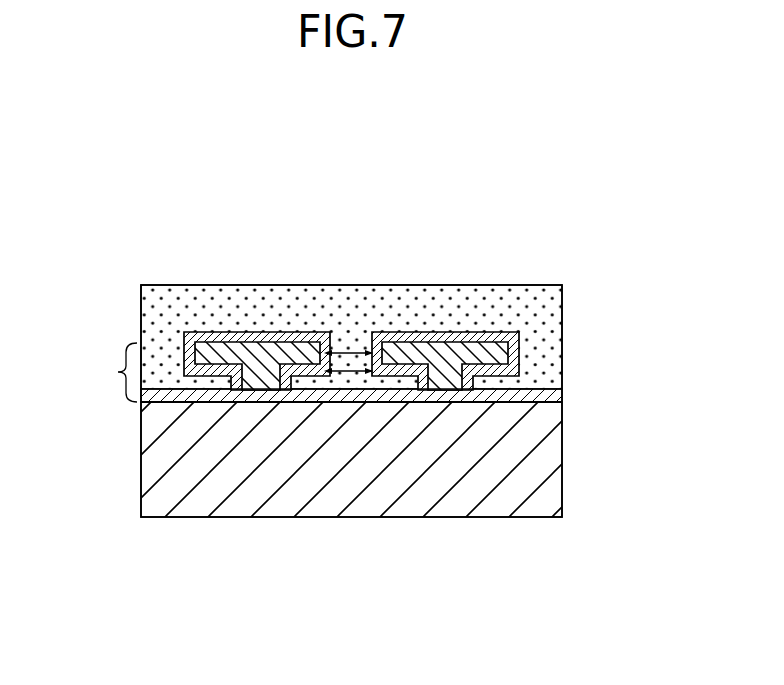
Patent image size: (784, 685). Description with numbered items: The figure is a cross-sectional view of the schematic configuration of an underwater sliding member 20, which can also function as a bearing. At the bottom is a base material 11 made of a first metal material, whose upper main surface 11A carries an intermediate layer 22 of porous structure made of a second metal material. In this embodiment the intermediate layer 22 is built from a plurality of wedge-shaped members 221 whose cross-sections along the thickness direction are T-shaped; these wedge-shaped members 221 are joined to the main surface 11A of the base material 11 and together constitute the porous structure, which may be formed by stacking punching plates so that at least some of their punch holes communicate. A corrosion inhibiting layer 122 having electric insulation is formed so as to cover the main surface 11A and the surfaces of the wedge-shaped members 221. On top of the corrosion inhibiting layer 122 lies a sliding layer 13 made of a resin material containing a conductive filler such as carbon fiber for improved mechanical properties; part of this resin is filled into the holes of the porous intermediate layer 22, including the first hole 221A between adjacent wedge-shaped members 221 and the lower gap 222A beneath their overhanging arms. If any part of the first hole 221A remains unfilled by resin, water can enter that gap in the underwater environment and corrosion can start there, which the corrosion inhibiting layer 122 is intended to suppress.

The underwater sliding member 20 is at (352, 393).
The base material 11 is at (163, 468).
The main surface 11A is at (172, 404).
The sliding layer 13 is at (180, 285).
The intermediate layer 22 is at (109, 372).
The corrosion inhibiting layer 122 is at (293, 335).
The wedge-shaped member 221 is at (255, 350).
The first hole 221A is at (352, 353).
The gap between lower electrode arms 222A is at (357, 372).